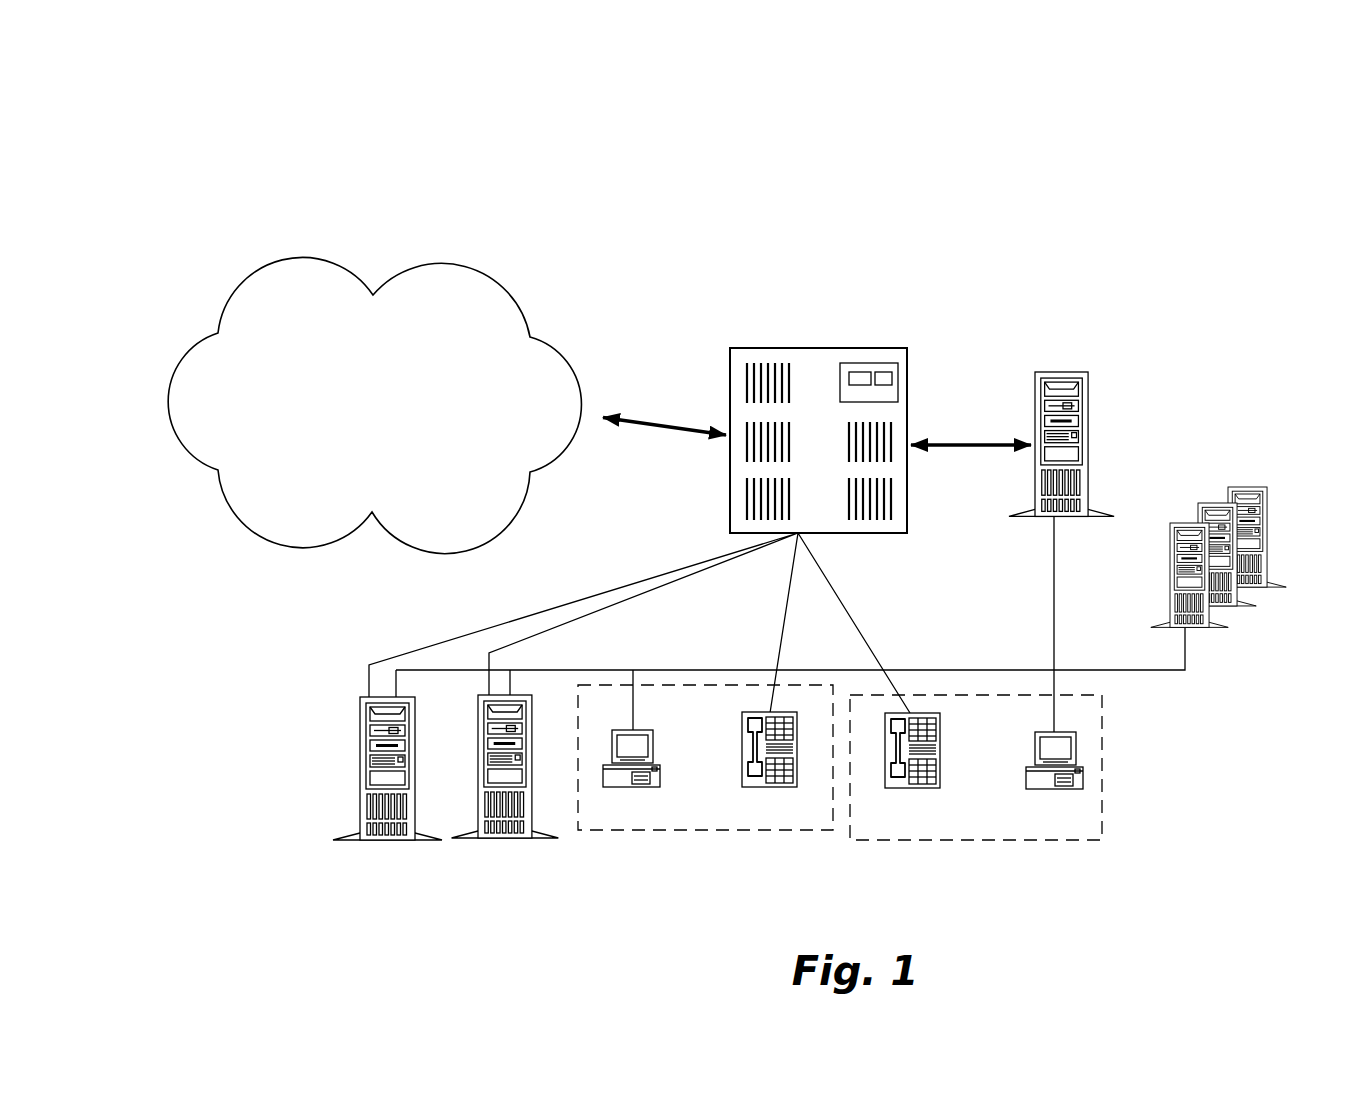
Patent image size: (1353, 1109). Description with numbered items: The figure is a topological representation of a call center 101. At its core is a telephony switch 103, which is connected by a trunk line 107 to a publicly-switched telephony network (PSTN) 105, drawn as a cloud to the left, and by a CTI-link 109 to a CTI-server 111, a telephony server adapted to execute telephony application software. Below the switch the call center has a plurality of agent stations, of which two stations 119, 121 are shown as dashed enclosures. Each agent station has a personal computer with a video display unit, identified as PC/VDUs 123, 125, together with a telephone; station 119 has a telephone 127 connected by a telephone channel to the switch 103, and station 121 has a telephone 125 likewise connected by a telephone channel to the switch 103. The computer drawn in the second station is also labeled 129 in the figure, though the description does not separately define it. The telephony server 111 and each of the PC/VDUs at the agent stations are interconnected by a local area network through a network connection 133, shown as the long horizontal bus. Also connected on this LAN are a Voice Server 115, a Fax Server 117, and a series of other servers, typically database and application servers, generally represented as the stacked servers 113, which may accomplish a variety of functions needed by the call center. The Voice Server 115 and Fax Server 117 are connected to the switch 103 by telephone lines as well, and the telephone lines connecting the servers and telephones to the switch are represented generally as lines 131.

The call center 101 is at (683, 226).
The telephony switch 103 is at (808, 348).
The publicly-switched telephony network (PSTN) 105 is at (457, 265).
The trunk line 107 is at (678, 430).
The CTI-link 109 is at (998, 447).
The CTI-server 111 is at (1052, 372).
The servers 113 is at (1230, 487).
The Voice Server 115 is at (367, 755).
The Fax Server 117 is at (480, 780).
The agent station 119 is at (668, 838).
The agent station 121 is at (937, 846).
The personal computer with video display unit (PC/VDU) 123 is at (655, 752).
The personal computer with video display unit (PC/VDU) 125 is at (945, 772).
The telephone 127 is at (740, 750).
The computer 129 is at (1033, 750).
The telephone lines 131 is at (580, 597).
The network connection 133 is at (1137, 672).